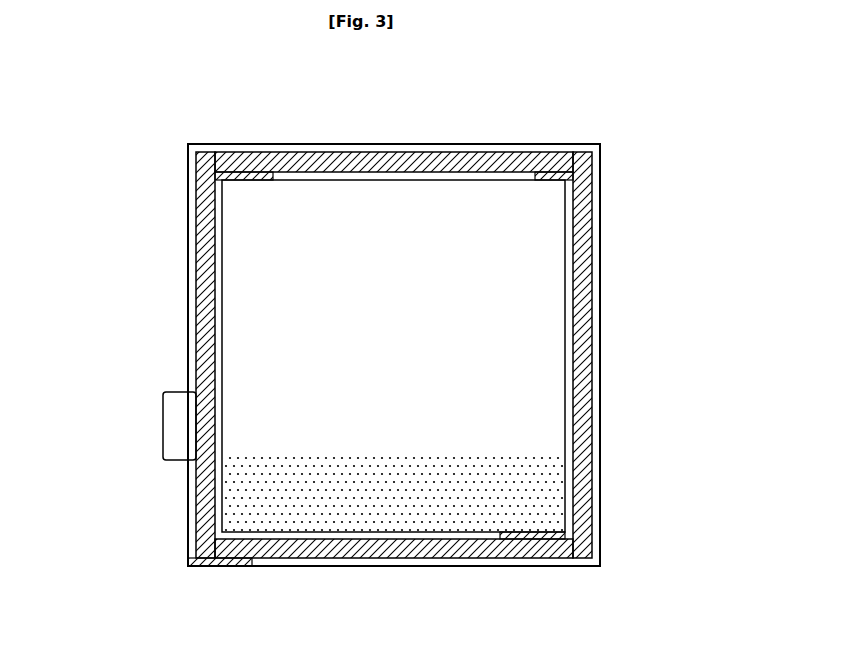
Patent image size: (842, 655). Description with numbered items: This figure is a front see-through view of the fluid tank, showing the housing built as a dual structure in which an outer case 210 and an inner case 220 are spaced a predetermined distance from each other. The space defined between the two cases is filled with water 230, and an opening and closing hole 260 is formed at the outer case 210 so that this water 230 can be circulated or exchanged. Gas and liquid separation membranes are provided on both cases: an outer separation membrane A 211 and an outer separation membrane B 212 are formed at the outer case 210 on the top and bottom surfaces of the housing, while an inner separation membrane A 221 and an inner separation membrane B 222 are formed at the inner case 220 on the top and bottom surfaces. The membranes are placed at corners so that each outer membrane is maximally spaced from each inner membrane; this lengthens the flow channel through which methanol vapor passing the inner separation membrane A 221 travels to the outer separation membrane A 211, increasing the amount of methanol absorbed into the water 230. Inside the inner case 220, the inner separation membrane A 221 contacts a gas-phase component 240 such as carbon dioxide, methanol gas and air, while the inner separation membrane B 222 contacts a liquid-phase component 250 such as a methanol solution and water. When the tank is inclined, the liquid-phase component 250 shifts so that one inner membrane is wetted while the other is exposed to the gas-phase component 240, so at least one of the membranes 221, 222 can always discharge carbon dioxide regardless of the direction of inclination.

The outer case 210 is at (350, 152).
The outer separation membrane A 211 is at (560, 156).
The outer separation membrane B 212 is at (228, 560).
The inner case 220 is at (423, 540).
The inner separation membrane A 221 is at (222, 156).
The inner separation membrane B 222 is at (545, 540).
The water 230 is at (580, 330).
The gas-phase component 240 is at (540, 275).
The liquid-phase component 250 is at (392, 475).
The opening and closing hole 260 is at (177, 415).